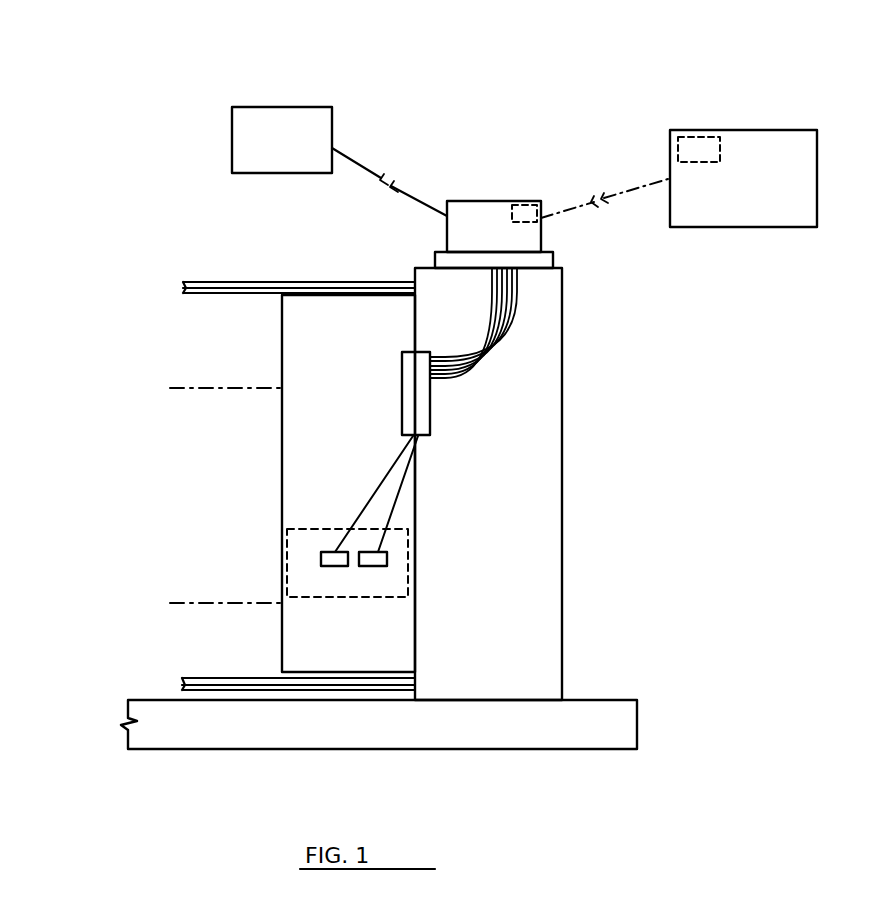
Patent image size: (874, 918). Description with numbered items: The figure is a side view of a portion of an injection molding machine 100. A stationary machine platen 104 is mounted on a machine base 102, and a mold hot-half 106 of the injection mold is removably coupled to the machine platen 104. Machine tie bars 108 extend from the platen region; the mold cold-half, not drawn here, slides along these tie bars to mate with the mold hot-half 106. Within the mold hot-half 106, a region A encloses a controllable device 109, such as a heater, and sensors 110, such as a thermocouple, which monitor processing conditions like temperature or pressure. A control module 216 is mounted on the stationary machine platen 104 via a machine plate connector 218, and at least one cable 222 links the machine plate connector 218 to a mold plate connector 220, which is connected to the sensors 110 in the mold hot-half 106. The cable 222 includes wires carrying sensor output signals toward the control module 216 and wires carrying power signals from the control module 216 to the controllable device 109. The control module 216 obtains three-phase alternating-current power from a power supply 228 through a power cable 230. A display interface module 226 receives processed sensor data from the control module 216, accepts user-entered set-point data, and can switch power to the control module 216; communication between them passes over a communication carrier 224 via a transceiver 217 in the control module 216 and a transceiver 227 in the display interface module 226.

The injection molding machine 100 is at (73, 217).
The machine base 102 is at (637, 718).
The stationary machine platen 104 is at (562, 316).
The mold hot-half 106 is at (282, 443).
The machine tie bars 108 is at (195, 282).
The controllable device 109 is at (372, 566).
The sensors 110 is at (335, 566).
The region A is at (285, 553).
The control module 216 is at (482, 201).
The transceiver 217 is at (522, 204).
The machine plate connector 218 is at (553, 259).
The mold plate connector 220 is at (402, 363).
The cable 222 is at (503, 336).
The communication carrier 224 is at (578, 207).
The display interface module 226 is at (767, 130).
The transceiver 227 is at (700, 137).
The power supply 228 is at (278, 107).
The power cable 230 is at (358, 162).